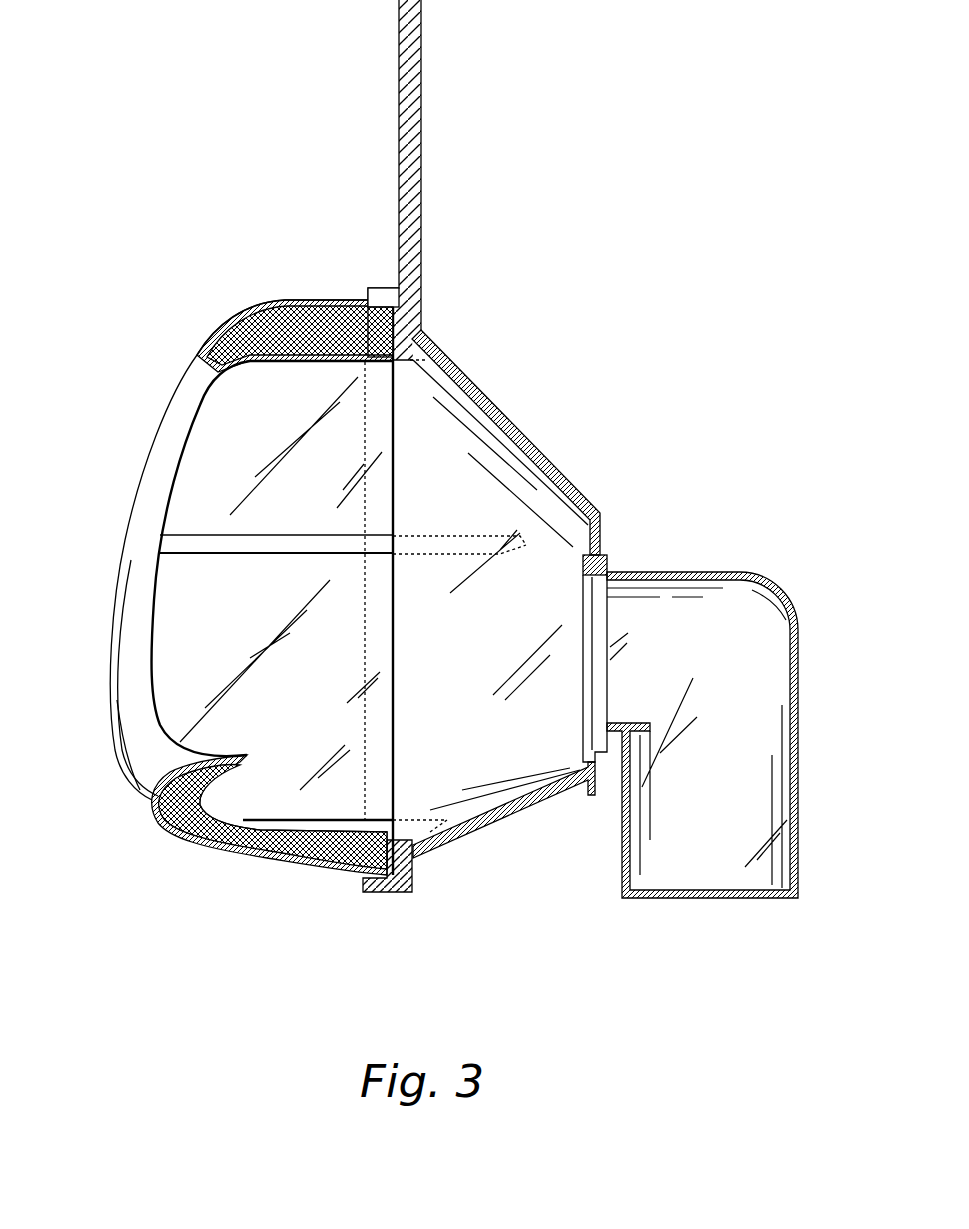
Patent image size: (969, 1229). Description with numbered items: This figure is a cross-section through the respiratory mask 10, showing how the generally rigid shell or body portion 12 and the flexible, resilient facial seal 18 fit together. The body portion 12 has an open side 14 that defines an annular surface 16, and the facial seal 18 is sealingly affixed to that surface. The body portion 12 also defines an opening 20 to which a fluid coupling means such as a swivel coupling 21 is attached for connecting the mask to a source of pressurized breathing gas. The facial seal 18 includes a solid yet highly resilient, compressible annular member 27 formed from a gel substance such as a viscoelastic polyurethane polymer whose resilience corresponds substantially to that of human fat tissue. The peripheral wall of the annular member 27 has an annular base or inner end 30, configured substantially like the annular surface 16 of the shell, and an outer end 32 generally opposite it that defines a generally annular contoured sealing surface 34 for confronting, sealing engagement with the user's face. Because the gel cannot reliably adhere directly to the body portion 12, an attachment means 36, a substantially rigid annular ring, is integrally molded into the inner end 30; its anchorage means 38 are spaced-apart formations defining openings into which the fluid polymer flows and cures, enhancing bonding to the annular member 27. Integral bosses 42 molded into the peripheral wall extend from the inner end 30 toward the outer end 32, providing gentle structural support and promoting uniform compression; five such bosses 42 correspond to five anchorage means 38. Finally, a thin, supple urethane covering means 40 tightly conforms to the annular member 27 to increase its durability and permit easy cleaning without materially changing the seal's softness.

The respiratory mask 10 is at (450, 469).
The body portion 12 is at (554, 463).
The open side 14 is at (452, 360).
The annular surface 16 is at (350, 877).
The facial seal 18 is at (239, 290).
The opening 20 is at (598, 540).
The swivel coupling 21 is at (755, 621).
The annular member 27 is at (152, 831).
The inner end 30 is at (427, 358).
The outer end 32 is at (203, 352).
The sealing surface 34 is at (133, 738).
The attachment means 36 is at (383, 305).
The anchorage means 38 is at (347, 312).
The covering means 40 is at (232, 862).
The bosses 42 is at (202, 545).